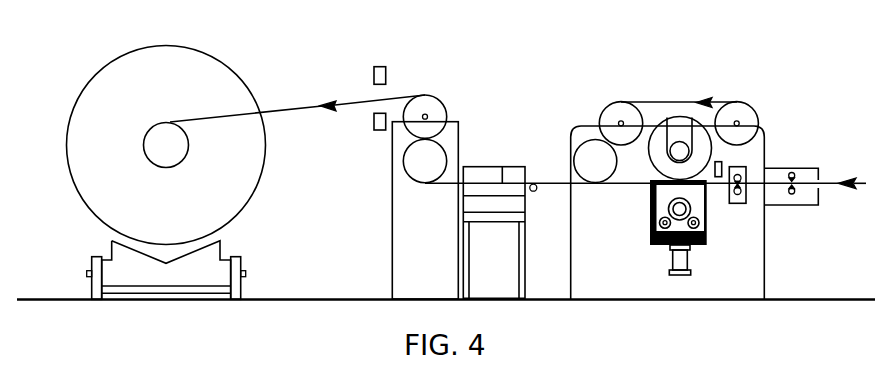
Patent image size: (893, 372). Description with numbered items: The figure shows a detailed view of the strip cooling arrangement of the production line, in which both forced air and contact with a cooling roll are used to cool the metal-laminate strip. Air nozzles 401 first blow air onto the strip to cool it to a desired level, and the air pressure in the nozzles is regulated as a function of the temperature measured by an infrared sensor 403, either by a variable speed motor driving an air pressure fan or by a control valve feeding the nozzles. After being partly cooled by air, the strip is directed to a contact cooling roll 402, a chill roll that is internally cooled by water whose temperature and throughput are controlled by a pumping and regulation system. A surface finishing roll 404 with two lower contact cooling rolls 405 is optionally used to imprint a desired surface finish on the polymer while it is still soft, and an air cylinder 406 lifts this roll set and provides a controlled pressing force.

The air nozzles 401 is at (792, 170).
The contact cooling roll 402 is at (680, 117).
The infrared sensor 403 is at (746, 161).
The surface finishing roll 404 is at (693, 209).
The lower contact cooling rolls 405 is at (706, 230).
The air cylinder 406 is at (695, 258).